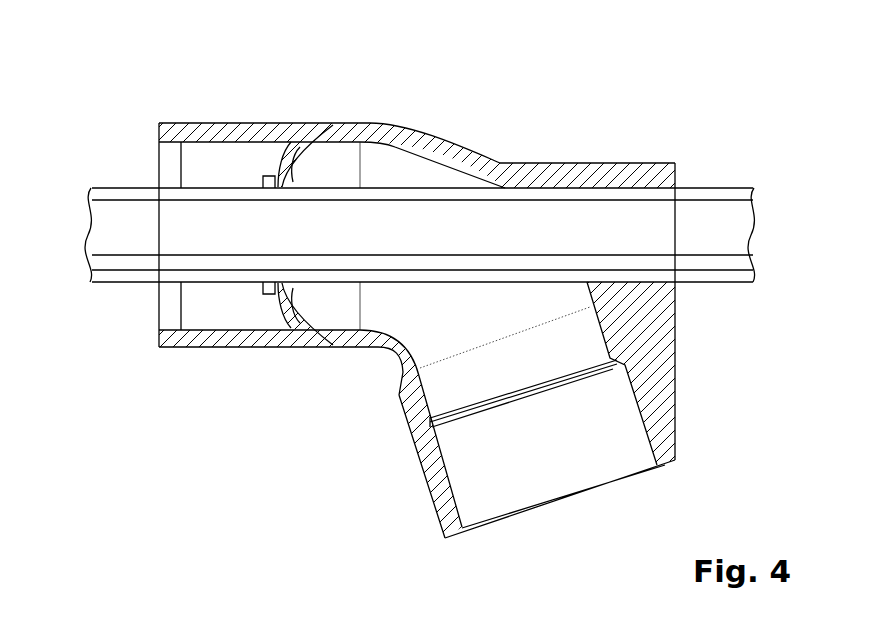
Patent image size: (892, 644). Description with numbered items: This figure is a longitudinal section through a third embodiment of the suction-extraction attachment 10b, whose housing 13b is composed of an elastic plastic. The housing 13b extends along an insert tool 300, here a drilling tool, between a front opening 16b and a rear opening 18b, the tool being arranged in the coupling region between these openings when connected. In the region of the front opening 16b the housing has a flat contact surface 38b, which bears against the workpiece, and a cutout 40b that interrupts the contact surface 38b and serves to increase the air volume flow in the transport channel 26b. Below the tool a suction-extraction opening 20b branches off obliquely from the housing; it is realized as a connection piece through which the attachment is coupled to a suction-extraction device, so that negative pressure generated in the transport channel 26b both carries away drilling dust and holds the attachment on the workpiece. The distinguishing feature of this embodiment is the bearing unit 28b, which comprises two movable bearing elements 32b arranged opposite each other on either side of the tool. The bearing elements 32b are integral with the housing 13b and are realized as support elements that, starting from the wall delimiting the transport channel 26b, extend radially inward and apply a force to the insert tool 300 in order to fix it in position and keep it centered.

The suction-extraction attachment 10b is at (460, 98).
The housing 13b is at (590, 172).
The insert tool 300 is at (713, 207).
The rear opening 18b is at (678, 262).
The front opening 16b is at (153, 213).
The contact surface 38b is at (159, 141).
The cutout 40b is at (152, 159).
The bearing unit 28b is at (247, 156).
The bearing elements 32b is at (289, 147).
The transport channel 26b is at (411, 326).
The suction-extraction opening 20b is at (403, 481).